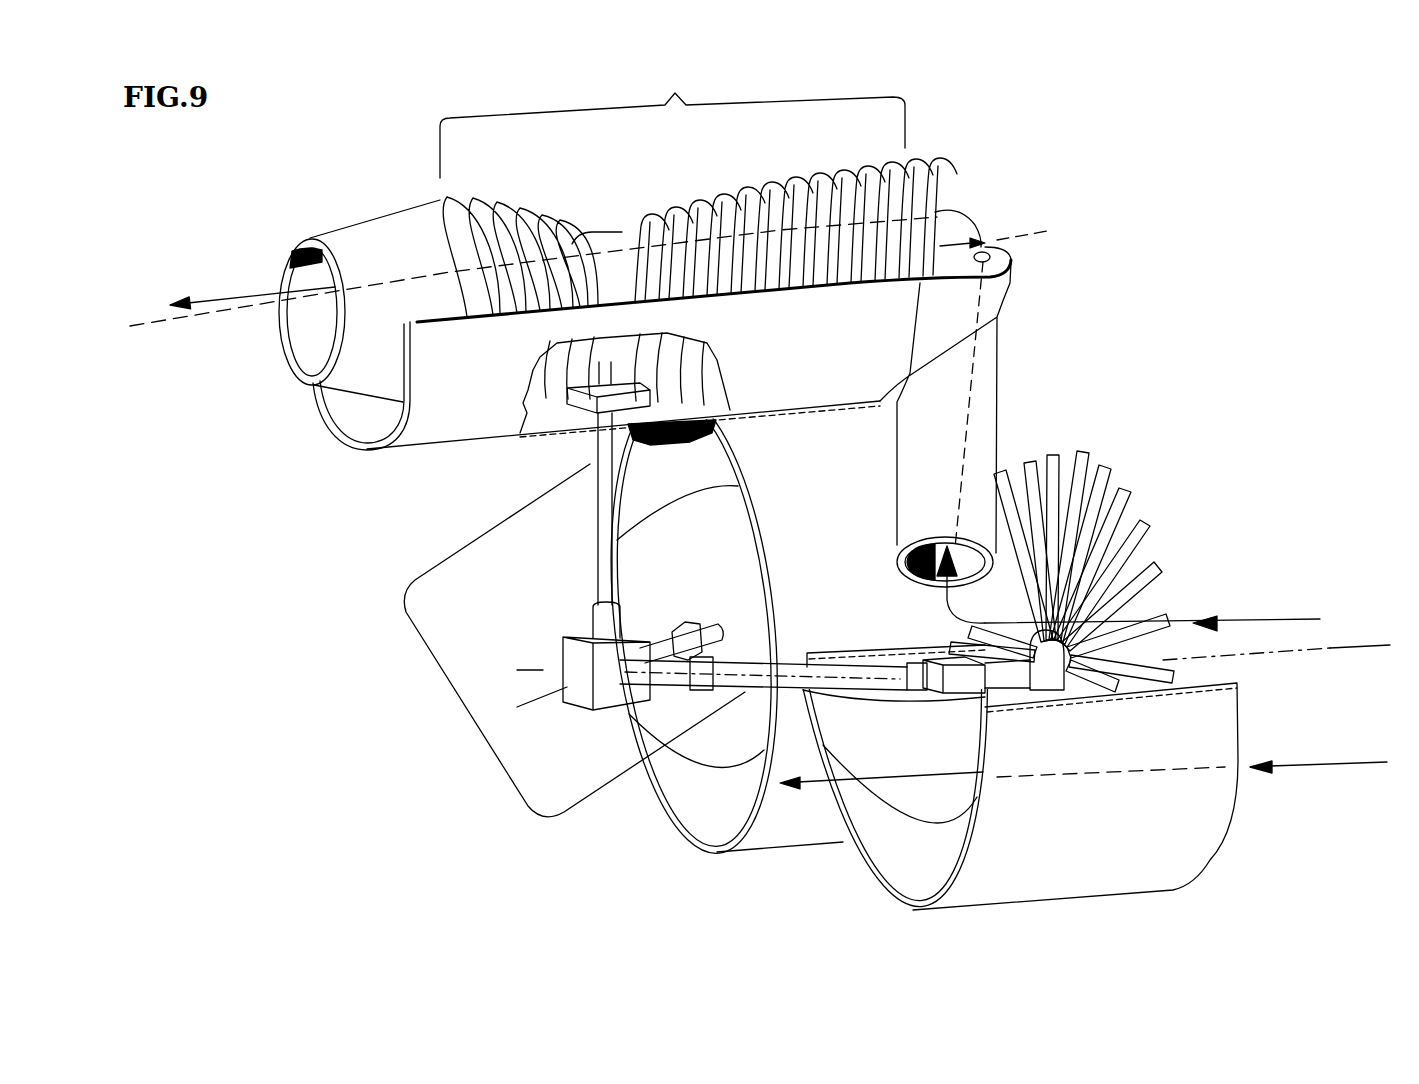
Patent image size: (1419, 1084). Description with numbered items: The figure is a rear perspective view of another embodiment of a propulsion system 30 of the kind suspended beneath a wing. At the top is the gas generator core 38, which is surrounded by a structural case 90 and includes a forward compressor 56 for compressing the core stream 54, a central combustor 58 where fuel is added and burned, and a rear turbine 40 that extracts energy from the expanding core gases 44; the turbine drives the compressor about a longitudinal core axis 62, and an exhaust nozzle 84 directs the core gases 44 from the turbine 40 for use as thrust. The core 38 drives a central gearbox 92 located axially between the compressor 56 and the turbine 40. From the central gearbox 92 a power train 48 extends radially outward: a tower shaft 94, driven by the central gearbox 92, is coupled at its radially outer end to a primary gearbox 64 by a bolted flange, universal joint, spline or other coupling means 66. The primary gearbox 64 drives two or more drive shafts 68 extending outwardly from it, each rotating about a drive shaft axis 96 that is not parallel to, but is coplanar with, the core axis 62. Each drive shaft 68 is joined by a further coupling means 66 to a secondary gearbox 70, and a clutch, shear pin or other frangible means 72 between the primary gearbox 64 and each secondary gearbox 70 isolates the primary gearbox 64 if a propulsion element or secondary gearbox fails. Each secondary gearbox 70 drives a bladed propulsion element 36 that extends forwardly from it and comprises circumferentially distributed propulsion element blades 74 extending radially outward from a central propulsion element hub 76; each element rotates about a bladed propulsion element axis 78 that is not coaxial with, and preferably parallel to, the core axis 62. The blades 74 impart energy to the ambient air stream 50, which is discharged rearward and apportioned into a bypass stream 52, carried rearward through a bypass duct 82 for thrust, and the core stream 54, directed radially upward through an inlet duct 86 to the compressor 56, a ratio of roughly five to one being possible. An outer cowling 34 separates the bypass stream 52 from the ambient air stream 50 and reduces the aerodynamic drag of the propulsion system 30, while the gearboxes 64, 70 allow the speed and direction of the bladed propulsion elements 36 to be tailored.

The propulsion system 30 is at (1227, 290).
The outer cowling 34 is at (672, 811).
The bladed propulsion element 36 is at (752, 899).
The gas generator core 38 is at (714, 195).
The turbine 40 is at (520, 195).
The core gases 44 is at (217, 297).
The power train 48 is at (574, 640).
The ambient air stream 50 is at (1313, 760).
The bypass stream 52 is at (873, 773).
The core stream 54 is at (953, 213).
The compressor 56 is at (756, 164).
The combustor 58 is at (602, 220).
The core axis 62 is at (158, 320).
The primary gearbox 64 is at (587, 637).
The coupling means 66 is at (605, 618).
The drive shaft 68 is at (667, 640).
The secondary gearbox 70 is at (953, 643).
The frangible means 72 is at (713, 662).
The propulsion element blades 74 is at (1093, 490).
The propulsion element hub 76 is at (1150, 657).
The bladed propulsion element axis 78 is at (1340, 647).
The bypass duct 82 is at (727, 800).
The exhaust nozzle 84 is at (373, 217).
The inlet duct 86 is at (987, 407).
The structural case 90 is at (460, 416).
The central gearbox 92 is at (620, 377).
The tower shaft 94 is at (607, 557).
The drive shaft axis 96 is at (543, 667).